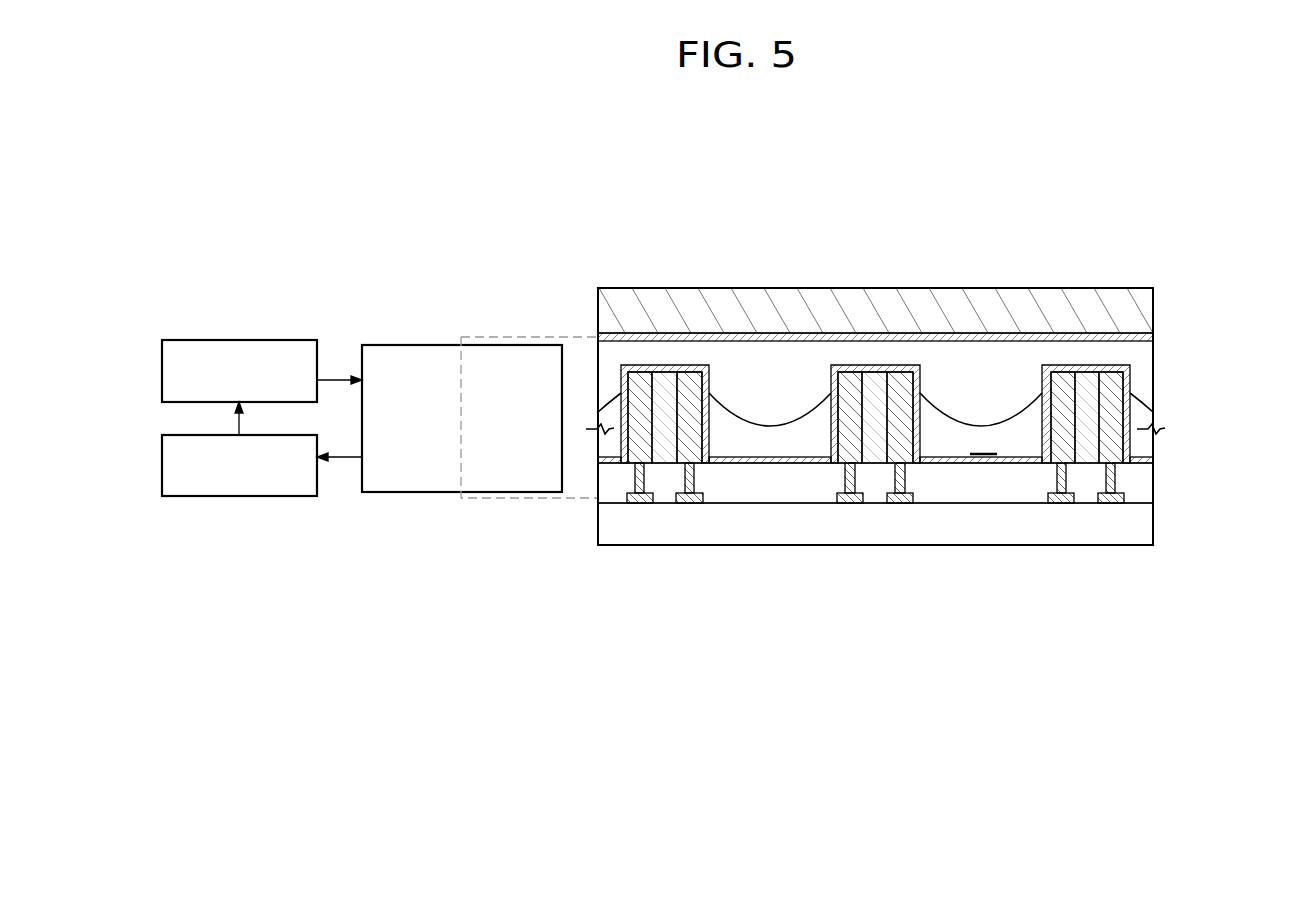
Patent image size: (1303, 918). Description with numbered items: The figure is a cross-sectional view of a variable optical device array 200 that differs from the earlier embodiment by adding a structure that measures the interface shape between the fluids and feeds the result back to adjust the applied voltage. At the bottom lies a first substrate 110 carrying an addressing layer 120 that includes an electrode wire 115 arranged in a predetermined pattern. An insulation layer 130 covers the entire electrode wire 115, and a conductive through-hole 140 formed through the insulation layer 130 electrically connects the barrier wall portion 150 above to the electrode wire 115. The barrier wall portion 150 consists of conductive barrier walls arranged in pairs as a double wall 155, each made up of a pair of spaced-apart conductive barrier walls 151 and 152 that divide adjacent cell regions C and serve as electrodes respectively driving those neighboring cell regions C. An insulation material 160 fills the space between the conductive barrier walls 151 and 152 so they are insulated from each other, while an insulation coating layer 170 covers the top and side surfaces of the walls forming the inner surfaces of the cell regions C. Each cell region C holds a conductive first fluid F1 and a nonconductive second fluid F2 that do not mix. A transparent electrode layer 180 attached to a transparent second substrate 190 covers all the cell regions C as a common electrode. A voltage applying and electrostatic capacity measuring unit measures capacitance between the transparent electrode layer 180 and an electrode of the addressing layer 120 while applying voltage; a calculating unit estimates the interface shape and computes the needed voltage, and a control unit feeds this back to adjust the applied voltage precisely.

The variable optical device array 200 is at (556, 264).
The cell region C is at (774, 388).
The double wall 155 is at (1123, 238).
The conductive barrier wall 151 is at (1062, 378).
The conductive barrier wall 152 is at (1112, 378).
The second substrate 190 is at (1153, 308).
The transparent electrode layer 180 is at (1153, 340).
The insulation material 160 is at (931, 333).
The insulation coating layer 170 is at (1128, 443).
The insulation layer 130 is at (1148, 483).
The first substrate 110 is at (1148, 524).
The electrode wire 115 is at (850, 498).
The addressing layer 120 is at (866, 514).
The barrier wall portion 150 is at (1041, 478).
The conductive through-hole 140 is at (1108, 480).
The conductive first fluid F1 is at (875, 402).
The nonconductive second fluid F2 is at (983, 442).